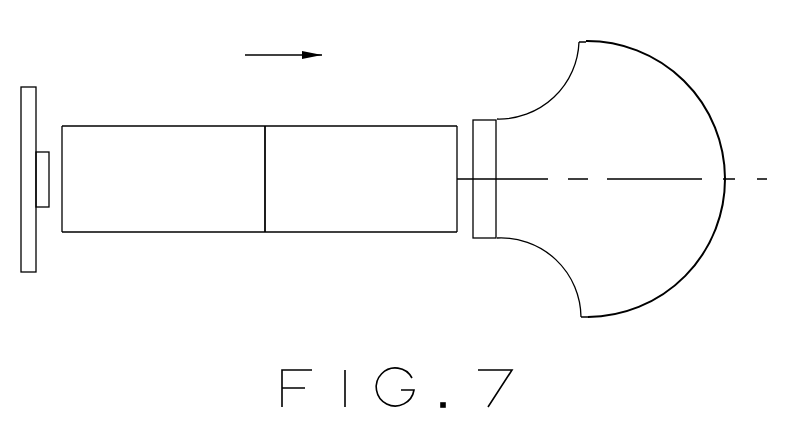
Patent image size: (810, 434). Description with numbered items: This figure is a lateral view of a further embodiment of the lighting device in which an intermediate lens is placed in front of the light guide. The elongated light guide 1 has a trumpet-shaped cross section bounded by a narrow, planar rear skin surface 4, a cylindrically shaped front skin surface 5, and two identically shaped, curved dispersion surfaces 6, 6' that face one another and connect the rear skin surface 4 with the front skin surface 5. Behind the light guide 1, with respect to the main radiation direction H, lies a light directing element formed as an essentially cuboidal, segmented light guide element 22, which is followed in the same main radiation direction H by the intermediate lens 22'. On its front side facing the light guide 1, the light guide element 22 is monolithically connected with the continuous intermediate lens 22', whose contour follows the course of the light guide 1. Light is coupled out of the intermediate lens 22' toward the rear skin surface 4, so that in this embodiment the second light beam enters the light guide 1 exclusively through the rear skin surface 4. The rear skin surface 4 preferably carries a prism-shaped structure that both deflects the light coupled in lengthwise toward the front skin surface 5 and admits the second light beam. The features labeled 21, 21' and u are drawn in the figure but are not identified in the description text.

The light guide 1 is at (630, 187).
The rear skin surface 4 is at (472, 238).
The front skin surface 5 is at (707, 245).
The dispersion surface 6 is at (538, 79).
The dispersion surface 6' is at (539, 281).
The upper housing wall 21 is at (259, 104).
The lower housing wall 21' is at (259, 259).
The light guide element 22 is at (163, 179).
The intermediate lens 22' is at (361, 179).
The main radiation direction H is at (260, 55).
The axis of rotation u is at (680, 178).